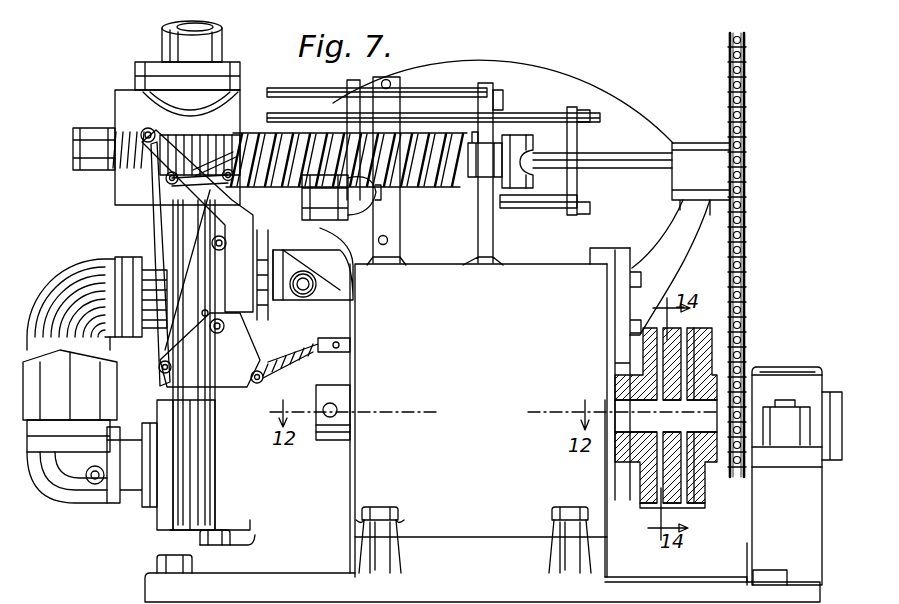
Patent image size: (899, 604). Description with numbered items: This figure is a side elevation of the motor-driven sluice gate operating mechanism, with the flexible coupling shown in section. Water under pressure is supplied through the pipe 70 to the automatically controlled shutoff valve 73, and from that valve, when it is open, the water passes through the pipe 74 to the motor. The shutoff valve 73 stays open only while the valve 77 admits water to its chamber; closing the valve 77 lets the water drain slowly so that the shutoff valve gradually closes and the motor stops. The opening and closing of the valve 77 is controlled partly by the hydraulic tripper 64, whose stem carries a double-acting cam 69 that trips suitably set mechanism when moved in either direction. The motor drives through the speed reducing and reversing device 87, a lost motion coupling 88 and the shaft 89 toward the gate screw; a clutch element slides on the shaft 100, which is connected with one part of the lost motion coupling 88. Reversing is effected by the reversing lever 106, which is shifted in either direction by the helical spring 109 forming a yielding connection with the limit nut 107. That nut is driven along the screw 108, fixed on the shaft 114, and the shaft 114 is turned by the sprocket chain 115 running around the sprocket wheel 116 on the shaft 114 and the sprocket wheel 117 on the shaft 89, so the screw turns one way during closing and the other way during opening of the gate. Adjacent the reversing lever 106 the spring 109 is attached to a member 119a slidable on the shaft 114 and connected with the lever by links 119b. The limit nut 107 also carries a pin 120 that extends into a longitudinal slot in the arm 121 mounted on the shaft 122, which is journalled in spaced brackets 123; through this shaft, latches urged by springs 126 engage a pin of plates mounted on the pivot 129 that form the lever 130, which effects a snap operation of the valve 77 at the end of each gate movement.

The hydraulic tripper 64 is at (320, 230).
The double-acting cam 69 is at (252, 190).
The pipe 70 is at (222, 38).
The shutoff valve 73 is at (137, 98).
The pipe 74 is at (103, 368).
The valve 77 is at (310, 300).
The speed reducing and reversing device 87 is at (490, 412).
The lost motion coupling 88 is at (707, 520).
The shaft 89 is at (705, 460).
The shaft 100 is at (635, 428).
The reversing lever 106 is at (523, 130).
The limit nut 107 is at (208, 126).
The screw 108 is at (124, 176).
The helical spring 109 is at (407, 112).
The shaft 114 is at (600, 165).
The sprocket chain 115 is at (747, 253).
The sprocket wheel 116 is at (725, 145).
The sprocket wheel 117 is at (748, 378).
The member 119a is at (443, 133).
The links 119b is at (508, 200).
The pin 120 is at (248, 125).
The arm 121 is at (240, 118).
The shaft 122 is at (140, 214).
The brackets 123 is at (197, 222).
The springs 126 is at (72, 592).
The pivot 129 is at (262, 358).
The lever 130 is at (240, 392).